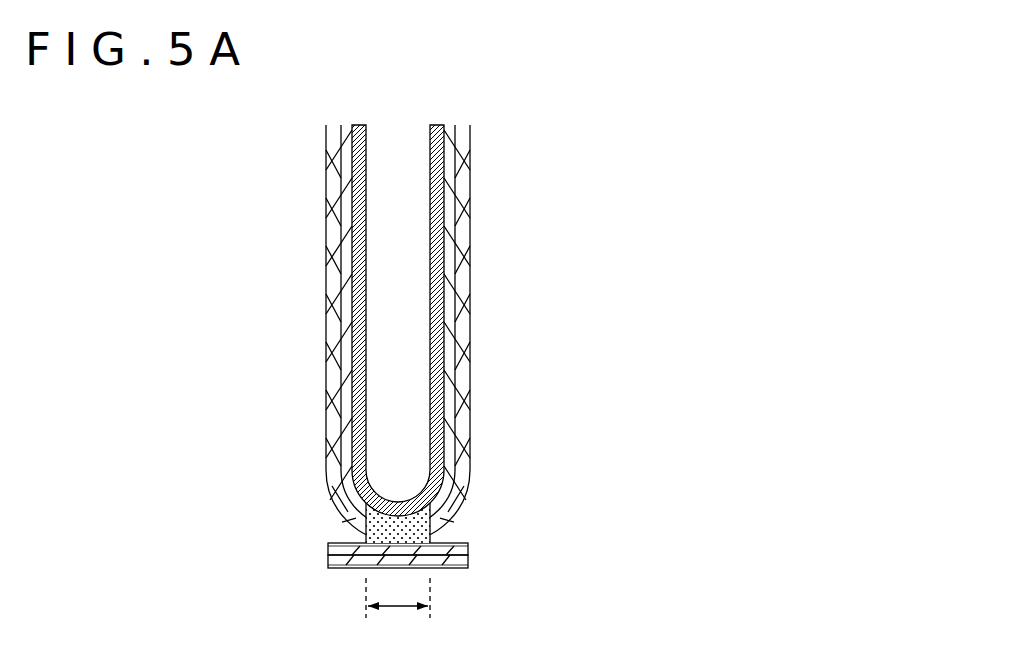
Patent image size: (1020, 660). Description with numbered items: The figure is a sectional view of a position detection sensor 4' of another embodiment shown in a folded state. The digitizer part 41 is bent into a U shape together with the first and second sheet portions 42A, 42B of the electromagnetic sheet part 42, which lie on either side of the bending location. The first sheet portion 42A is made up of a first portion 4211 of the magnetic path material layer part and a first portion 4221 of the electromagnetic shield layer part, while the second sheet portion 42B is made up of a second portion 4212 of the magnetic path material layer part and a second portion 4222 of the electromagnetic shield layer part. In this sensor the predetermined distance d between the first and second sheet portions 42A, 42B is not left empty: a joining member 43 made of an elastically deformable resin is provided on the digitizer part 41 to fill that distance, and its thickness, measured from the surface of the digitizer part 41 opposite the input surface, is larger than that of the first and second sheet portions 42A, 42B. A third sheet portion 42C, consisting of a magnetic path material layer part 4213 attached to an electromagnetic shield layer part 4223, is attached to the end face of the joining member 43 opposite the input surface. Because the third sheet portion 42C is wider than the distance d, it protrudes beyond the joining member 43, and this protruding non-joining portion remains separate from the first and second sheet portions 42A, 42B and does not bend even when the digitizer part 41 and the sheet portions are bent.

The position detection sensor 4' is at (400, 362).
The digitizer part 41 is at (433, 142).
The electromagnetic sheet part 42 is at (324, 190).
The first sheet portion 42A is at (210, 265).
The second sheet portion 42B is at (588, 250).
The third sheet portion 42C is at (593, 512).
The first portion of the magnetic path material layer part 4211 is at (338, 251).
The first portion of the electromagnetic shield layer part 4221 is at (338, 299).
The second portion of the magnetic path material layer part 4212 is at (447, 237).
The second portion of the electromagnetic shield layer part 4222 is at (462, 285).
The magnetic path material layer part 4213 is at (460, 550).
The electromagnetic shield layer part 4223 is at (460, 562).
The joining member 43 is at (372, 527).